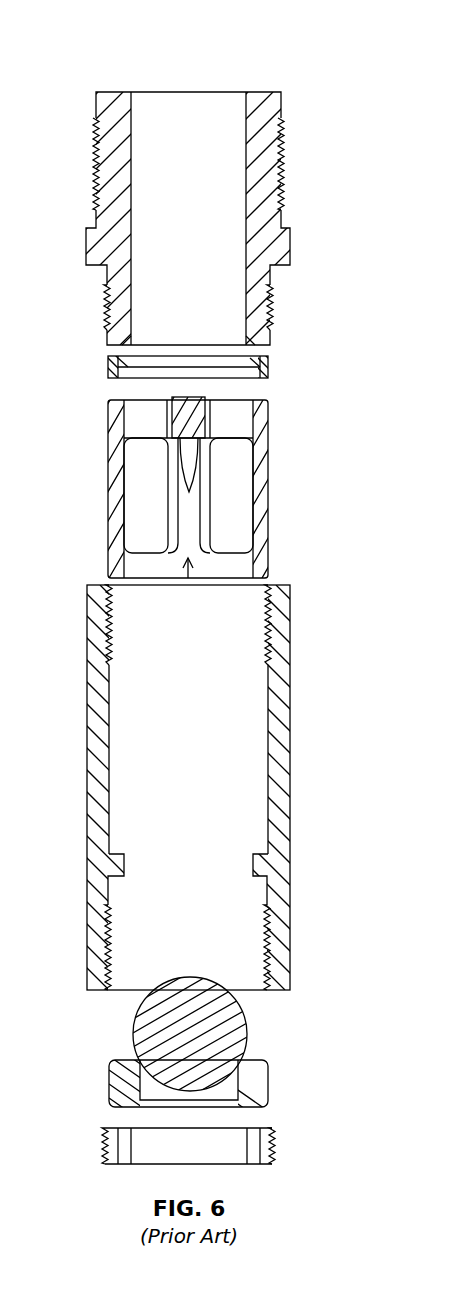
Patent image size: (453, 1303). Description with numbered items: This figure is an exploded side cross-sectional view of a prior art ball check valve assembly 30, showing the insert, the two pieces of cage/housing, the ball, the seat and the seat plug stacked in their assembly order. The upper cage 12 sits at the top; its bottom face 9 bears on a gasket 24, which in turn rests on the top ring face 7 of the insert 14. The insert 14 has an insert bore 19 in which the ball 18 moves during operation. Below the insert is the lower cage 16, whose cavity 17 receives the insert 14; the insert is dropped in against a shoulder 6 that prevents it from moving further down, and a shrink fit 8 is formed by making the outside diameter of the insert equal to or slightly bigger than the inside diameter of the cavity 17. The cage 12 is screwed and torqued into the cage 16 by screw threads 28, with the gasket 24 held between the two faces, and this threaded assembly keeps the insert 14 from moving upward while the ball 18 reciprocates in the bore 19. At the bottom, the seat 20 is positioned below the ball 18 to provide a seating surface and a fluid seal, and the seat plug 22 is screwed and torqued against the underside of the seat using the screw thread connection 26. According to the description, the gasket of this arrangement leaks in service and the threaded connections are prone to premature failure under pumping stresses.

The prior art valve assembly 30 is at (282, 52).
The cage 12 is at (262, 148).
The screw threads 28 is at (270, 312).
The bottom face 9 is at (254, 338).
The gasket 24 is at (108, 377).
The top ring face 7 is at (260, 399).
The insert 14 is at (260, 462).
The insert bore 19 is at (123, 528).
The cage 16 is at (279, 733).
The cavity 17 is at (206, 731).
The shrink fit 8 is at (270, 797).
The shoulder 6 is at (257, 853).
The screw thread connection 26 is at (272, 942).
The ball 18 is at (228, 1038).
The seat 20 is at (253, 1087).
The seat plug 22 is at (267, 1145).